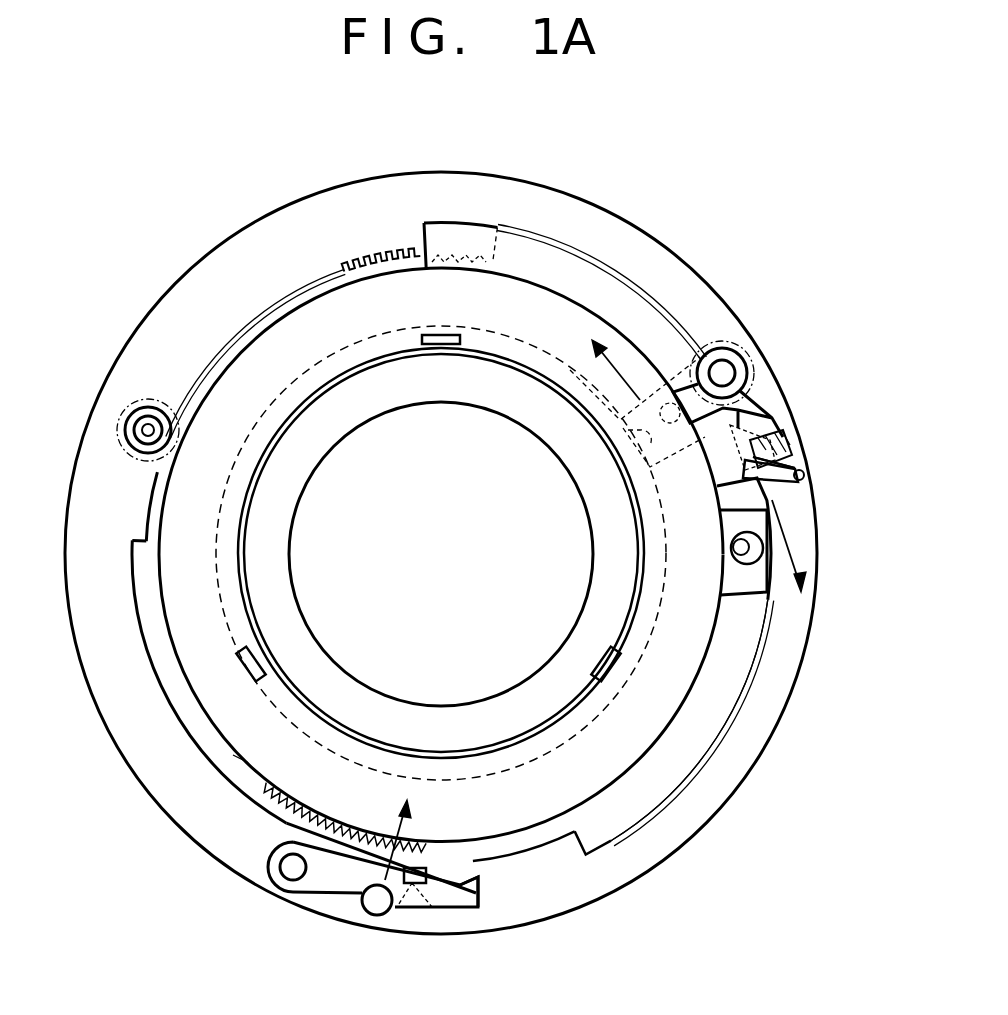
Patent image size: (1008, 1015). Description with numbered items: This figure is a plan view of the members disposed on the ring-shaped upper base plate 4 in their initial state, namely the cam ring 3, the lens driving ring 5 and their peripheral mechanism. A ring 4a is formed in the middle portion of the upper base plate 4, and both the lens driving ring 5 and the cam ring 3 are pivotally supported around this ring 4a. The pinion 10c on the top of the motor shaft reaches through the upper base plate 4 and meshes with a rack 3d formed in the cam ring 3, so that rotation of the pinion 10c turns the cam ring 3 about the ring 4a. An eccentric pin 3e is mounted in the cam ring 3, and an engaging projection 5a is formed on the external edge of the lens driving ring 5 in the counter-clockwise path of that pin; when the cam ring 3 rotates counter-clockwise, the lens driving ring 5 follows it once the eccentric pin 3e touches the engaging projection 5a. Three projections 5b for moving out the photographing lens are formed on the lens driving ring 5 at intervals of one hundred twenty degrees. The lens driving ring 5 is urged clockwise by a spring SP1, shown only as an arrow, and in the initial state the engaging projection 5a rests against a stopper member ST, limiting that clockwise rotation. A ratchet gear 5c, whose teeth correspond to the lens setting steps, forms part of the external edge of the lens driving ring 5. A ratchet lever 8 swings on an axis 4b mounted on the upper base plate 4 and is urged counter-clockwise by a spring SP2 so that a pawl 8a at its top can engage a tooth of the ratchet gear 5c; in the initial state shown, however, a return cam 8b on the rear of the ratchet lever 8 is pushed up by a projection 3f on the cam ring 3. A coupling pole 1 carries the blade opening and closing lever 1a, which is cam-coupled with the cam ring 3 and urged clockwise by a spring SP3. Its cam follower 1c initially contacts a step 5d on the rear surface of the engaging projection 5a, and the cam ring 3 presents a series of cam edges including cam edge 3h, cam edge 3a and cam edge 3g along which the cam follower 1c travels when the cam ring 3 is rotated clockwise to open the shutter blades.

The coupling pole 1 is at (718, 360).
The blade opening and closing lever 1a is at (745, 345).
The cam follower 1c is at (783, 433).
The cam ring 3 is at (538, 852).
The cam edge 3a is at (716, 487).
The rack 3d is at (365, 268).
The eccentric pin 3e is at (731, 548).
The projection 3f is at (447, 873).
The cam edge 3g is at (793, 452).
The cam edge 3h is at (793, 582).
The upper base plate 4 is at (131, 767).
The ring 4a is at (521, 424).
The axis 4b is at (280, 878).
The lens driving ring 5 is at (205, 717).
The engaging projection 5a is at (803, 480).
The projections 5b is at (430, 352).
The ratchet gear 5c is at (290, 796).
The step 5d is at (774, 462).
The ratchet lever 8 is at (345, 893).
The pawl 8a is at (472, 907).
The return cam 8b is at (415, 907).
The pinion 10c is at (148, 407).
The spring SP1 is at (800, 528).
The spring SP2 is at (400, 800).
The spring SP3 is at (608, 360).
The stopper member ST is at (804, 472).